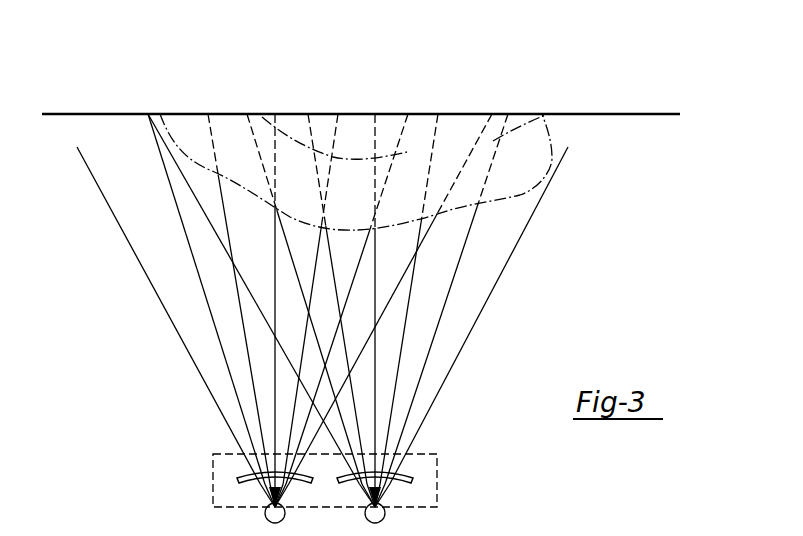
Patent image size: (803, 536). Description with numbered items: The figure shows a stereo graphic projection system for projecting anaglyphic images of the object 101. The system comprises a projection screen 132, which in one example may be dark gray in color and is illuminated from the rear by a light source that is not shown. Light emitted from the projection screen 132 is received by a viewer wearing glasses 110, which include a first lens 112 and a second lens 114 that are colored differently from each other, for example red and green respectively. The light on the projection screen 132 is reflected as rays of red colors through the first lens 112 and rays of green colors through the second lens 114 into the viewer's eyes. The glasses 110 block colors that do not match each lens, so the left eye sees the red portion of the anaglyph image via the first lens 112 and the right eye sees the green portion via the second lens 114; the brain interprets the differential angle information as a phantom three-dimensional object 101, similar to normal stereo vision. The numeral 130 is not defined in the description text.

The imaging surface 130 is at (241, 100).
The projection screen 132 is at (492, 114).
The object 101 is at (503, 187).
The glasses 110 is at (437, 478).
The first lens 112 is at (238, 477).
The second lens 114 is at (411, 477).